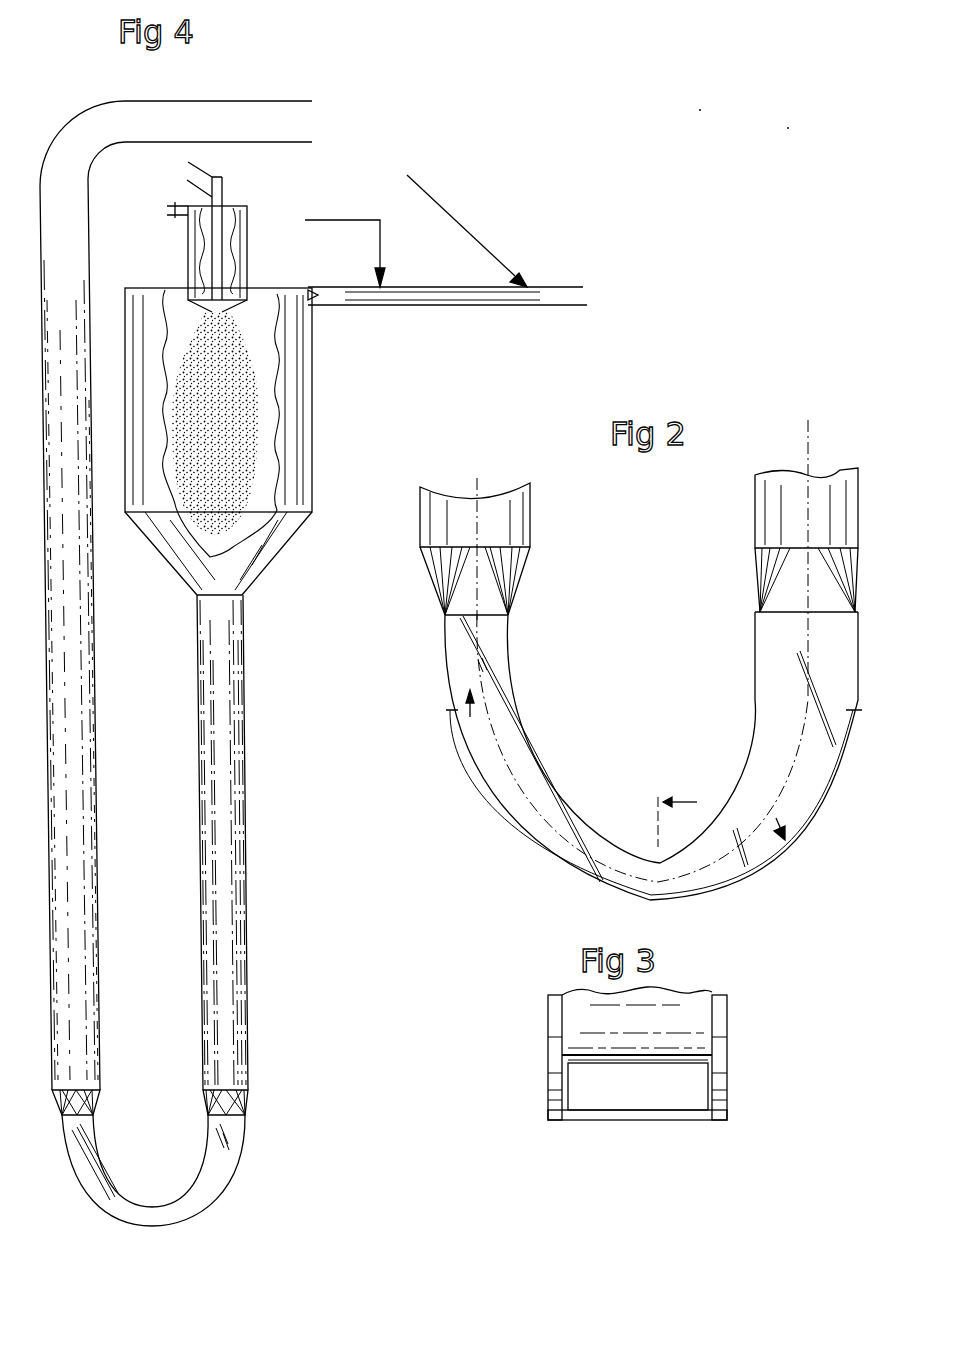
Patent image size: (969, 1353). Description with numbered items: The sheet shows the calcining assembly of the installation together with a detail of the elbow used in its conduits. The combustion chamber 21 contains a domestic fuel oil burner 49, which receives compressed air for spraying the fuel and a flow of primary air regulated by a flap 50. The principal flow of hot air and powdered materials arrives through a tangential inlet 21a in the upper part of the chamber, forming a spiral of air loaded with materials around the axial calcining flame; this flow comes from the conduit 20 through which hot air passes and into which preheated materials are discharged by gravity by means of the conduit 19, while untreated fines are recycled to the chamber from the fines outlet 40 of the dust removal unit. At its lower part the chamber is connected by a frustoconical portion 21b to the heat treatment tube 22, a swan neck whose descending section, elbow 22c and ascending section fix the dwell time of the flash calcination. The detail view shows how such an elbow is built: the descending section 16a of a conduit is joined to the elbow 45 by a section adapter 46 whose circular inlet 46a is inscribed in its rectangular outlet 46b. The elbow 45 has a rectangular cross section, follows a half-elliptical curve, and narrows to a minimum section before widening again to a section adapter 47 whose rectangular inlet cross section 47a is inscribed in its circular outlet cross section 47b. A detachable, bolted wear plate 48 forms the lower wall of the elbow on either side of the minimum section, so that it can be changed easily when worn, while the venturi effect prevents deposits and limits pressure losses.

In FIG. 2, the descending section of the by-pass conduit 16a is at (785, 497).
In FIG. 4, the conduit 19 is at (462, 225).
In FIG. 4, the conduit 20 is at (478, 302).
In FIG. 4, the combustion chamber 21 is at (310, 440).
In FIG. 4, the inlet 21a is at (310, 293).
In FIG. 4, the frustoconical portion 21b is at (245, 600).
In FIG. 4, the heat treatment tube 22 is at (246, 783).
In FIG. 4, the elbow 22c is at (207, 1178).
In FIG. 4, the fines outlet 40 is at (343, 220).
In FIG. 2, the elbow 45 is at (775, 763).
In FIG. 3, the elbow 45 is at (597, 1048).
In FIG. 2, the section adapter 46 is at (800, 568).
In FIG. 2, the inlet 46a is at (780, 548).
In FIG. 2, the outlet 46b is at (808, 620).
In FIG. 2, the section adapter 47 is at (428, 580).
In FIG. 2, the rectangular inlet cross section 47a is at (495, 618).
In FIG. 2, the circular-shaped outlet cross section 47b is at (505, 566).
In FIG. 2, the detachable wear plate 48 is at (577, 880).
In FIG. 3, the detachable wear plate 48 is at (590, 1122).
In FIG. 4, the domestic fuel oil burner 49 is at (247, 218).
In FIG. 4, the flap 50 is at (177, 212).